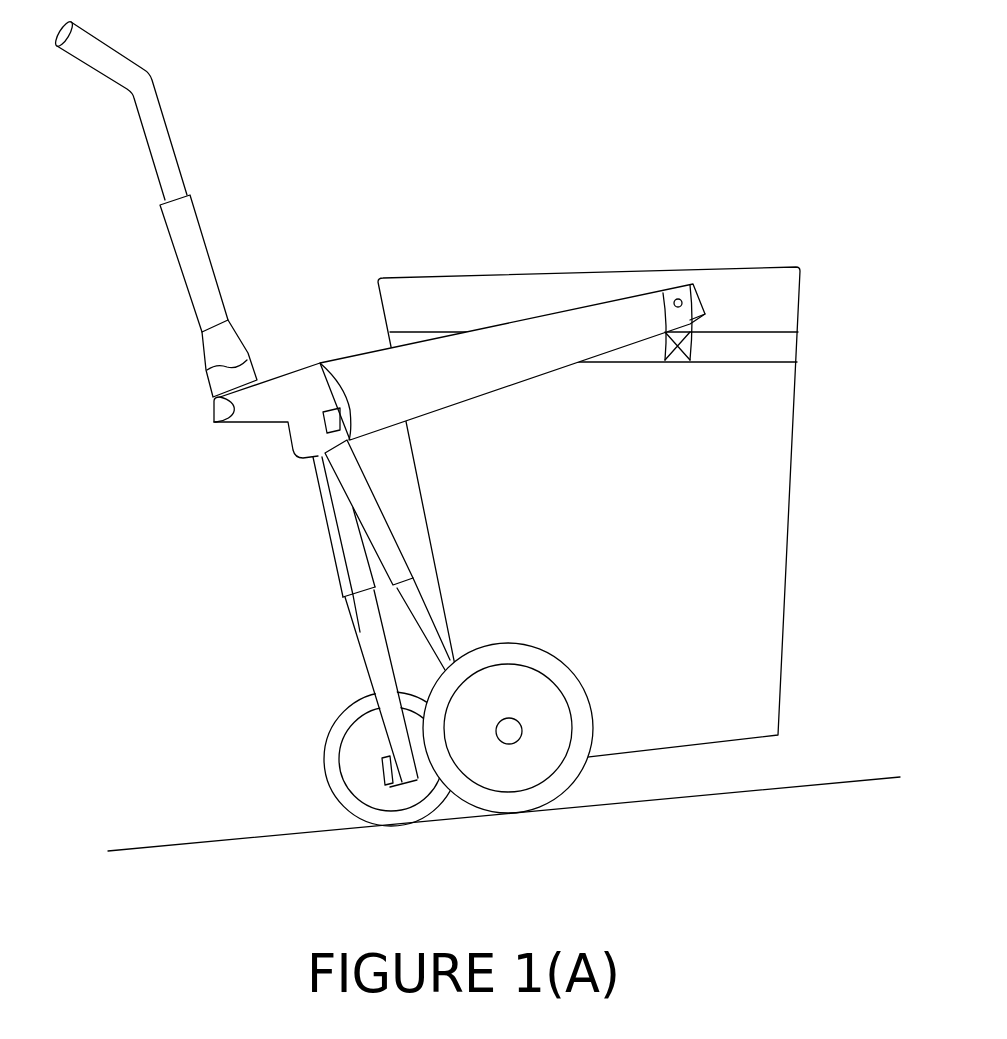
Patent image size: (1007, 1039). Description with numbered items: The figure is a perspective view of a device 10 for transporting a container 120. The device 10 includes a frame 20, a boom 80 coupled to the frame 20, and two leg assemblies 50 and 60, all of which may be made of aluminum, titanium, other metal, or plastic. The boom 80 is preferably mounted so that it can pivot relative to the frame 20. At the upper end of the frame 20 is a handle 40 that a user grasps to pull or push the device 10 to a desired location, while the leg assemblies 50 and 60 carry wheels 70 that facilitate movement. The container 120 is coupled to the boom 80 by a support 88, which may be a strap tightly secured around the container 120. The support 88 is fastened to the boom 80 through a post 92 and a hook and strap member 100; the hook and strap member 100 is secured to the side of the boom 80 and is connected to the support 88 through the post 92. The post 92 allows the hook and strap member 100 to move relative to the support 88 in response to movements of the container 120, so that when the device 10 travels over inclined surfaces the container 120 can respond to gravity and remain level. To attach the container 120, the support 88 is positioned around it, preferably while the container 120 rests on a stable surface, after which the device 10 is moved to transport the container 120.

The device 10 is at (477, 428).
The frame 20 is at (166, 312).
The handle 40 is at (105, 52).
The leg assembly 50 is at (343, 580).
The leg assembly 60 is at (398, 555).
The wheels 70 is at (326, 754).
The boom 80 is at (566, 398).
The support 88 is at (787, 347).
The post 92 is at (672, 298).
The hook and strap member 100 is at (693, 332).
The container 120 is at (780, 410).